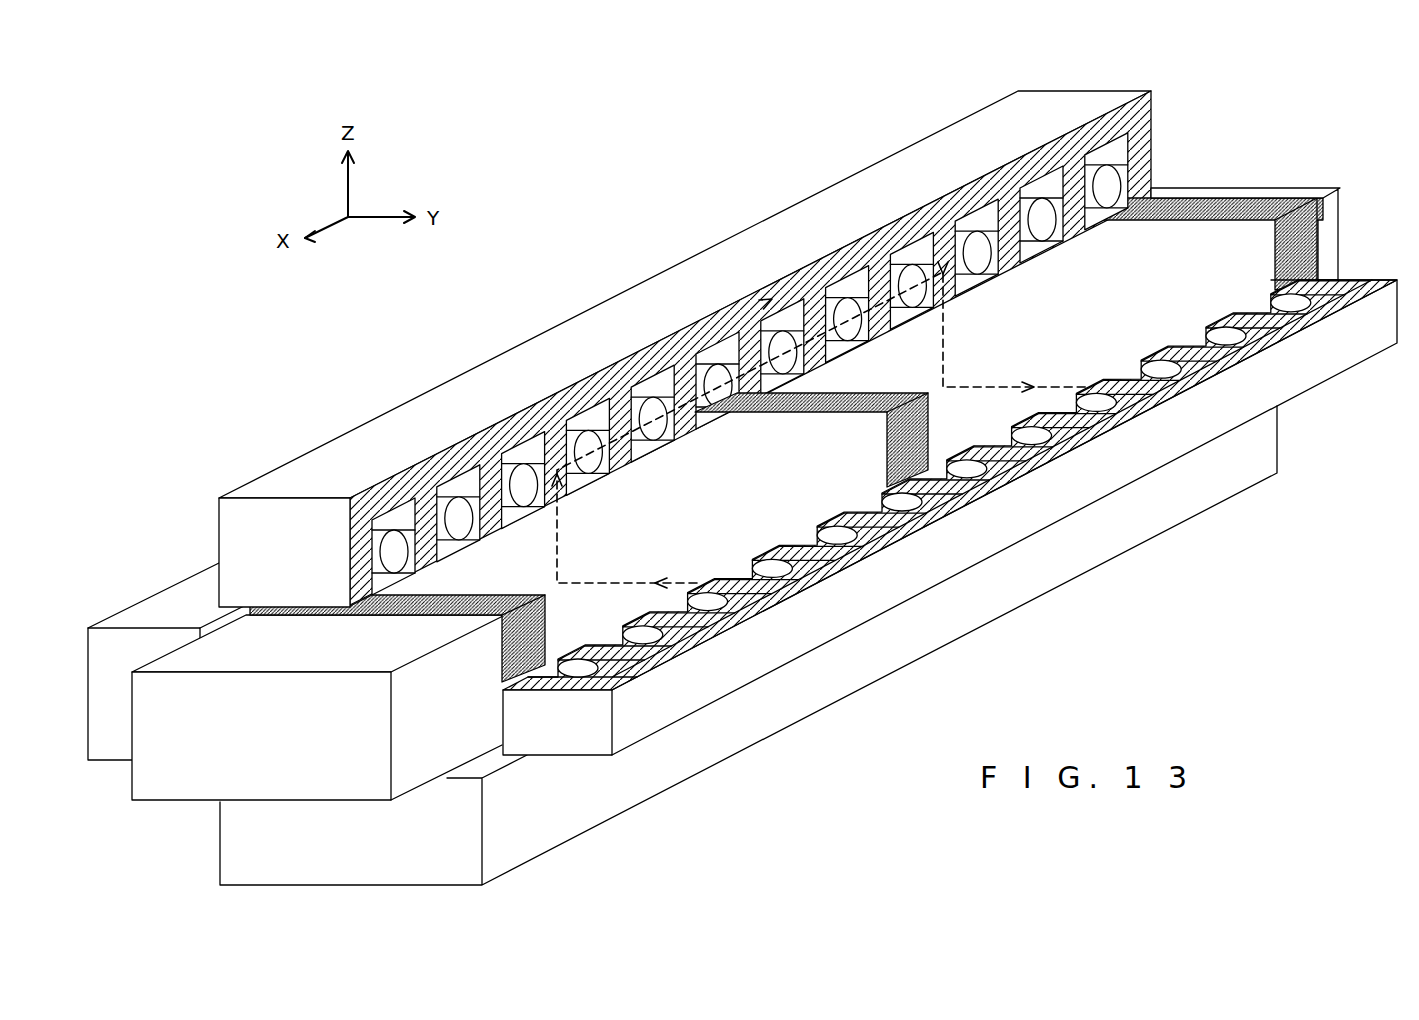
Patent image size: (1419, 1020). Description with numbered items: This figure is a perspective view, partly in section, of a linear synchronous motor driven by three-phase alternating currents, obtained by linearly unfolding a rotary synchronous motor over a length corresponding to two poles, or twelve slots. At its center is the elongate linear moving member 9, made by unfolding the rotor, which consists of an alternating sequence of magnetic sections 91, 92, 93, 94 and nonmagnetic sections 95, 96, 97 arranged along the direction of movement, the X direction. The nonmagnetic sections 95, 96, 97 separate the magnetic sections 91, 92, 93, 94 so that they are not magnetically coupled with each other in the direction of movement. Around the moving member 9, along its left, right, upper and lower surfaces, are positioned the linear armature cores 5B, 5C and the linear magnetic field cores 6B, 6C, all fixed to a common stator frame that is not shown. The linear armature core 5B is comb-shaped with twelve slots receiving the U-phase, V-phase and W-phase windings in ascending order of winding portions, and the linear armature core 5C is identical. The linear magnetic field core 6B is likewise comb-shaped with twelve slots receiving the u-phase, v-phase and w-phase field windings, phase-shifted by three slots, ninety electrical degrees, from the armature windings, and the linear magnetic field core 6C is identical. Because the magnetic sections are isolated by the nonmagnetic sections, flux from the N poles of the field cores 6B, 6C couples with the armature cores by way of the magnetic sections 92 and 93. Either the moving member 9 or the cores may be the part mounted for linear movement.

The linear armature core 5B is at (243, 518).
The linear armature core 5C is at (950, 557).
The linear magnetic field core 6B is at (1273, 377).
The linear magnetic field core 6C is at (111, 650).
The linear moving member 9 is at (1229, 175).
The magnetic section 91 is at (155, 780).
The magnetic section 92 is at (745, 560).
The magnetic section 93 is at (1170, 313).
The magnetic section 94 is at (1337, 208).
The nonmagnetic section 95 is at (525, 647).
The nonmagnetic section 96 is at (907, 450).
The nonmagnetic section 97 is at (1342, 313).